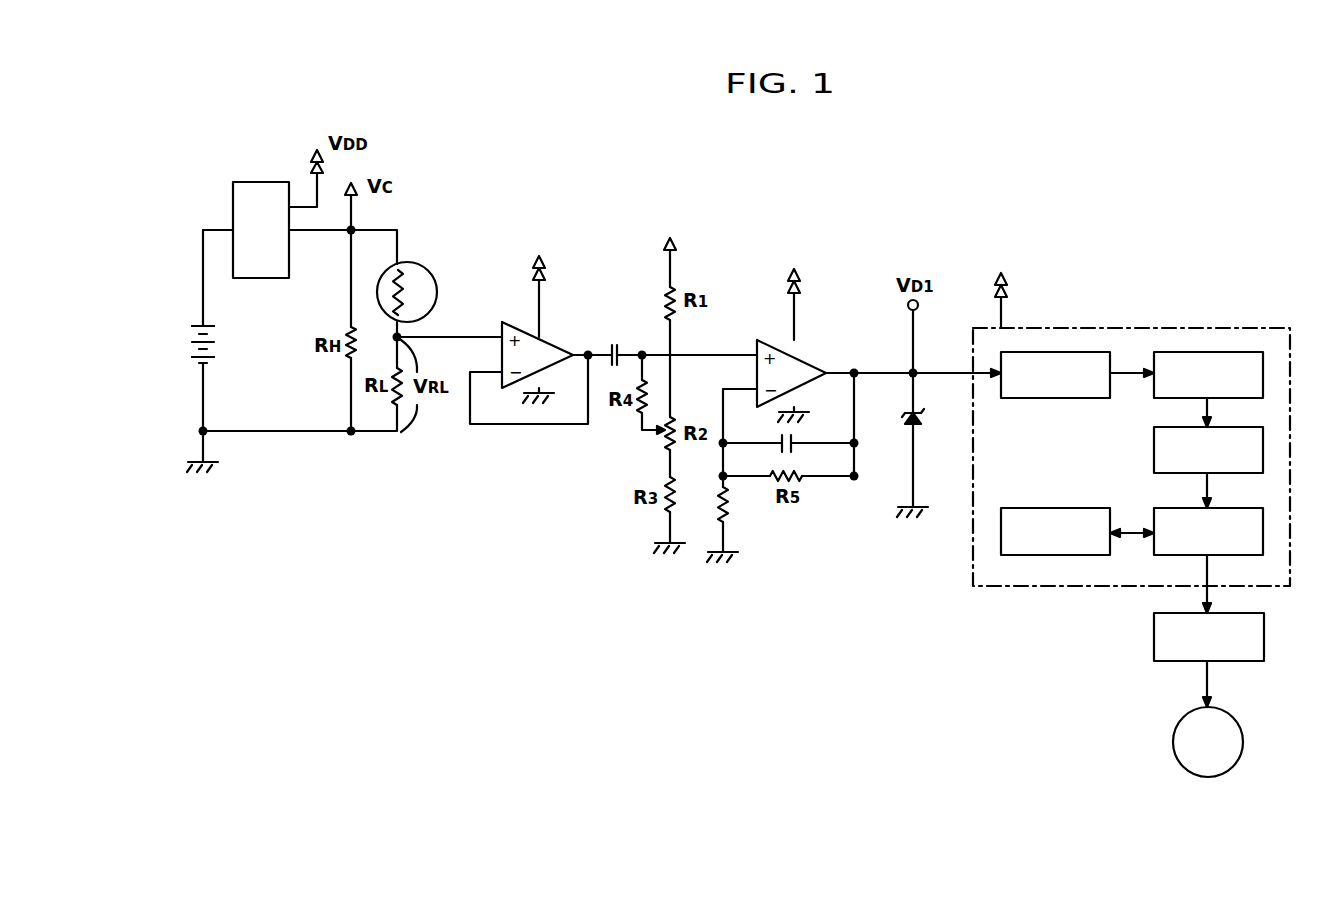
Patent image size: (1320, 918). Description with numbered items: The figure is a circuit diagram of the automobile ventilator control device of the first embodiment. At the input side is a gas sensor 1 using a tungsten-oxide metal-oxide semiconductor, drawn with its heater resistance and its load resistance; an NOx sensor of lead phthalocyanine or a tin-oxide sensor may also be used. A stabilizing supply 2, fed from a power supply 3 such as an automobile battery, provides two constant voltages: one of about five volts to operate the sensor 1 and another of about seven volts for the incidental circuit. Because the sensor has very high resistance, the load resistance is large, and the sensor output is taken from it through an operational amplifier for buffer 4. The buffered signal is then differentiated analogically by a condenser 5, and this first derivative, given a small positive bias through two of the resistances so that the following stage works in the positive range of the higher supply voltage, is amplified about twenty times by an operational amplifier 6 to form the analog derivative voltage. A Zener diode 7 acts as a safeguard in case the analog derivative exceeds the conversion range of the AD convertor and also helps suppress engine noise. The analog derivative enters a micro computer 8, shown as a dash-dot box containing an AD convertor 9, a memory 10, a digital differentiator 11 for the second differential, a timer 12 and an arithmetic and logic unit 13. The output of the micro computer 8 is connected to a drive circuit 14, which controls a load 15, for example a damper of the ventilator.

The gas sensor 1 is at (427, 282).
The stabilizing supply 2 is at (247, 187).
The power supply 3 is at (218, 348).
The operational amplifier for buffer 4 is at (548, 348).
The condenser for differential 5 is at (617, 340).
The operational amplifier 6 is at (802, 367).
The Zener diode 7 is at (922, 420).
The micro computer 8 is at (1021, 597).
The AD convertor 9 is at (1051, 392).
The memory 10 is at (1162, 383).
The digital differentiator 11 is at (1162, 462).
The timer 12 is at (1033, 510).
The arithmetic and logic unit 13 is at (1158, 542).
The drive circuit 14 is at (1160, 642).
The load 15 is at (1180, 730).